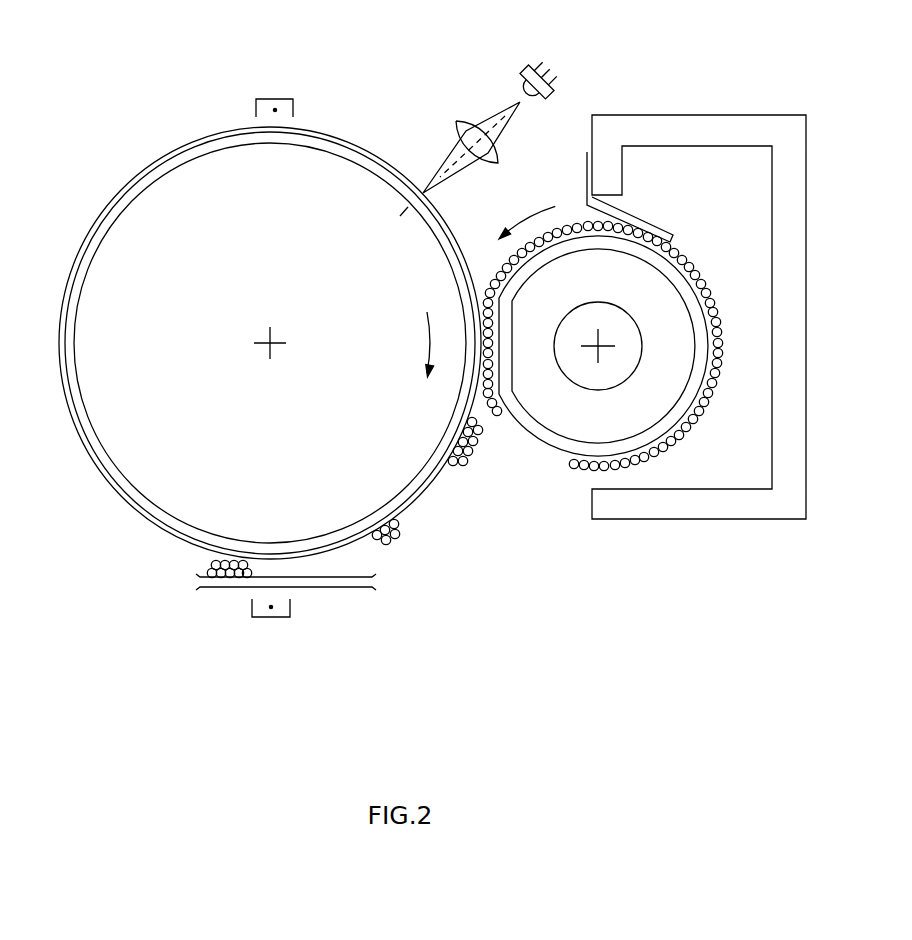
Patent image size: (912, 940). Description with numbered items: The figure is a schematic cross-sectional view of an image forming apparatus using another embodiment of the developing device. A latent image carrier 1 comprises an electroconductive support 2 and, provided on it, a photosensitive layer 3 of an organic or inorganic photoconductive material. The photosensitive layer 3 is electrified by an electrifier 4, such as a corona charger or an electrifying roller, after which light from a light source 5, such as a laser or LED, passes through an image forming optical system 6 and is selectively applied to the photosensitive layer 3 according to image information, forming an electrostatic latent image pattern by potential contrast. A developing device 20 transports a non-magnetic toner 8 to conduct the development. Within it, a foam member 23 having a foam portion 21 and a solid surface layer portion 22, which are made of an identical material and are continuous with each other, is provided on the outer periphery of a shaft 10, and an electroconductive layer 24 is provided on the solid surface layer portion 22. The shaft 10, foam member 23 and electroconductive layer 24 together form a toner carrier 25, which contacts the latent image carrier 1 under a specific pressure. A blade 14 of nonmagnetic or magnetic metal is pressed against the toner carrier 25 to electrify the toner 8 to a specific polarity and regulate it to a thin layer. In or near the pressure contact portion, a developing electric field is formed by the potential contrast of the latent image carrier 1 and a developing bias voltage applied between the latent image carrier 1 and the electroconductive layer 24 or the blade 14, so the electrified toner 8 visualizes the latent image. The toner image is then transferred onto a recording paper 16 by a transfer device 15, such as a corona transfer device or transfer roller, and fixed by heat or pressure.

The latent image carrier 1 is at (62, 140).
The electroconductive support 2 is at (131, 201).
The photosensitive layer 3 is at (106, 210).
The electrifier 4 is at (280, 99).
The light source 5 is at (521, 73).
The image forming optical system 6 is at (456, 128).
The toner 8 is at (688, 259).
The shaft 10 is at (600, 373).
The blade 14 is at (586, 175).
The transfer device 15 is at (262, 617).
The recording paper 16 is at (323, 583).
The developing device 20 is at (657, 127).
The foam portion 21 is at (548, 424).
The solid surface layer portion 22 is at (522, 425).
The foam member 23 is at (457, 522).
The electroconductive layer 24 is at (553, 462).
The toner carrier 25 is at (477, 570).